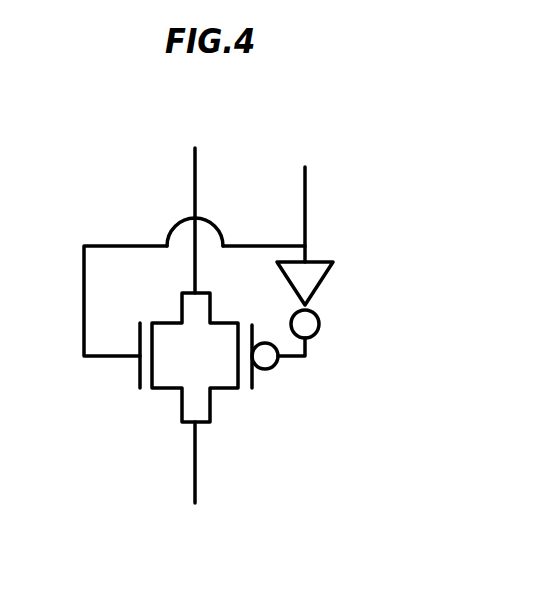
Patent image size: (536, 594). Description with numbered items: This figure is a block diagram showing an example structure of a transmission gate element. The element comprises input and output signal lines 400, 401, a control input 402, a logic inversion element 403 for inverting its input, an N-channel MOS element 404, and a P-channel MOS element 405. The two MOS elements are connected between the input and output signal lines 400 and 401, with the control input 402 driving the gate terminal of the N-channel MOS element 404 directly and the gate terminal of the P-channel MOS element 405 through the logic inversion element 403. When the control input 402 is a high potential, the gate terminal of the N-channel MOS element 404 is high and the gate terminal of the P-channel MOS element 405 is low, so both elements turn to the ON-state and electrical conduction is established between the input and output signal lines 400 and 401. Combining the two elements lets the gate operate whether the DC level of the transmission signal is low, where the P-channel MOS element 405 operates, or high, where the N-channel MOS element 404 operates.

The input signal line 400 is at (207, 163).
The output signal line 401 is at (213, 490).
The control input 402 is at (313, 172).
The logic inversion element 403 is at (338, 275).
The N-channel MOS element 404 is at (138, 397).
The P-channel MOS element 405 is at (252, 407).